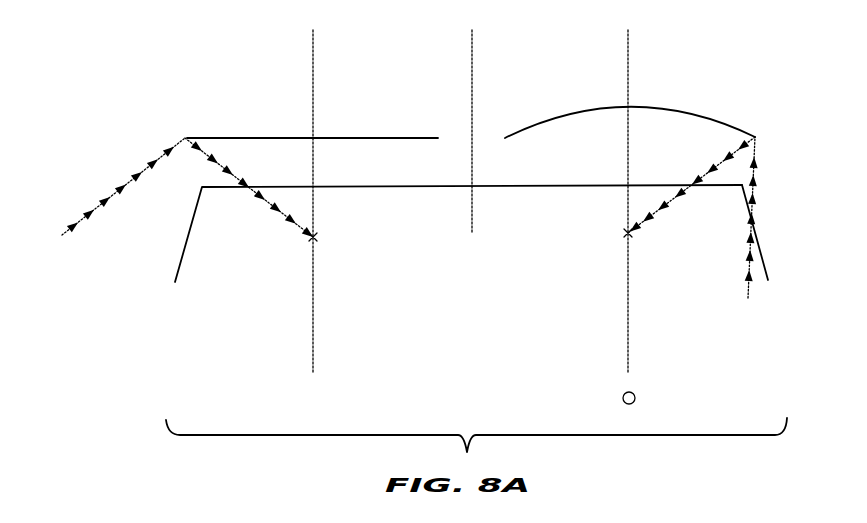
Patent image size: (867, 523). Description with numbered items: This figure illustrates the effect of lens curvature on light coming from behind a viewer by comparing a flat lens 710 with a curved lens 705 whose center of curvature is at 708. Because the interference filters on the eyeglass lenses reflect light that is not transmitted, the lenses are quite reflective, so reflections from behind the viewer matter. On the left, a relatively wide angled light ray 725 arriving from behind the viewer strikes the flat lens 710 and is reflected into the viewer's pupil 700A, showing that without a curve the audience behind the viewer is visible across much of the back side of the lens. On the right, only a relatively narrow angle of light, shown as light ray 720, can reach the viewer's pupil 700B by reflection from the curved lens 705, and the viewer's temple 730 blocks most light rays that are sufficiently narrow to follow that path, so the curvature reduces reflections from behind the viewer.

The curved lens 705 is at (638, 104).
The center of curvature 708 is at (678, 408).
The flat lens 710 is at (312, 110).
The light ray 720 is at (738, 250).
The wide angled light ray 725 is at (100, 193).
The viewer's temple 730 is at (796, 232).
The viewer's pupil 700A is at (309, 200).
The viewer's pupil 700B is at (636, 199).